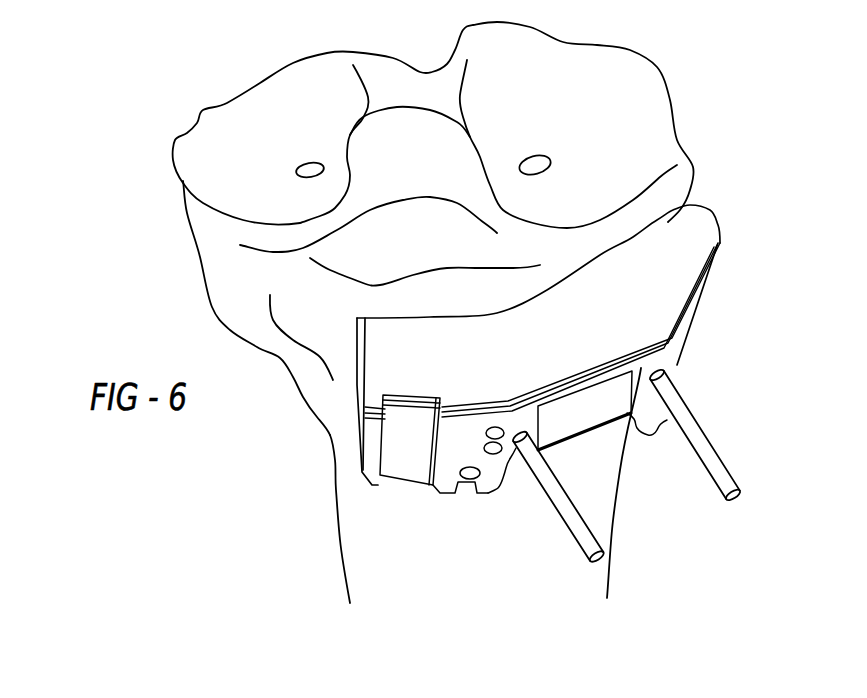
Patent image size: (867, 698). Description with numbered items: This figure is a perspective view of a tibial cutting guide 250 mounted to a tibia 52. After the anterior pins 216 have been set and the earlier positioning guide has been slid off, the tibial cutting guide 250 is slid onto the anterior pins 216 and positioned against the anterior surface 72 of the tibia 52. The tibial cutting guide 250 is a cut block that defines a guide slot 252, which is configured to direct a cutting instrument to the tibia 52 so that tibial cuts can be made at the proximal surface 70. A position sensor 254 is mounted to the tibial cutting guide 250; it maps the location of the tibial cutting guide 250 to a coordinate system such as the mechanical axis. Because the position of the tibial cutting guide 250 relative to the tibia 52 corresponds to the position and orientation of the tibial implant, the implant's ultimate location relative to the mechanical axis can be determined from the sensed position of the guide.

The tibia 52 is at (223, 258).
The proximal surface 70 is at (427, 72).
The anterior surface 72 is at (380, 540).
The tibial cutting guide 250 is at (687, 237).
The guide slot 252 is at (680, 327).
The position sensor 254 is at (618, 412).
The anterior pins 216 is at (600, 540).